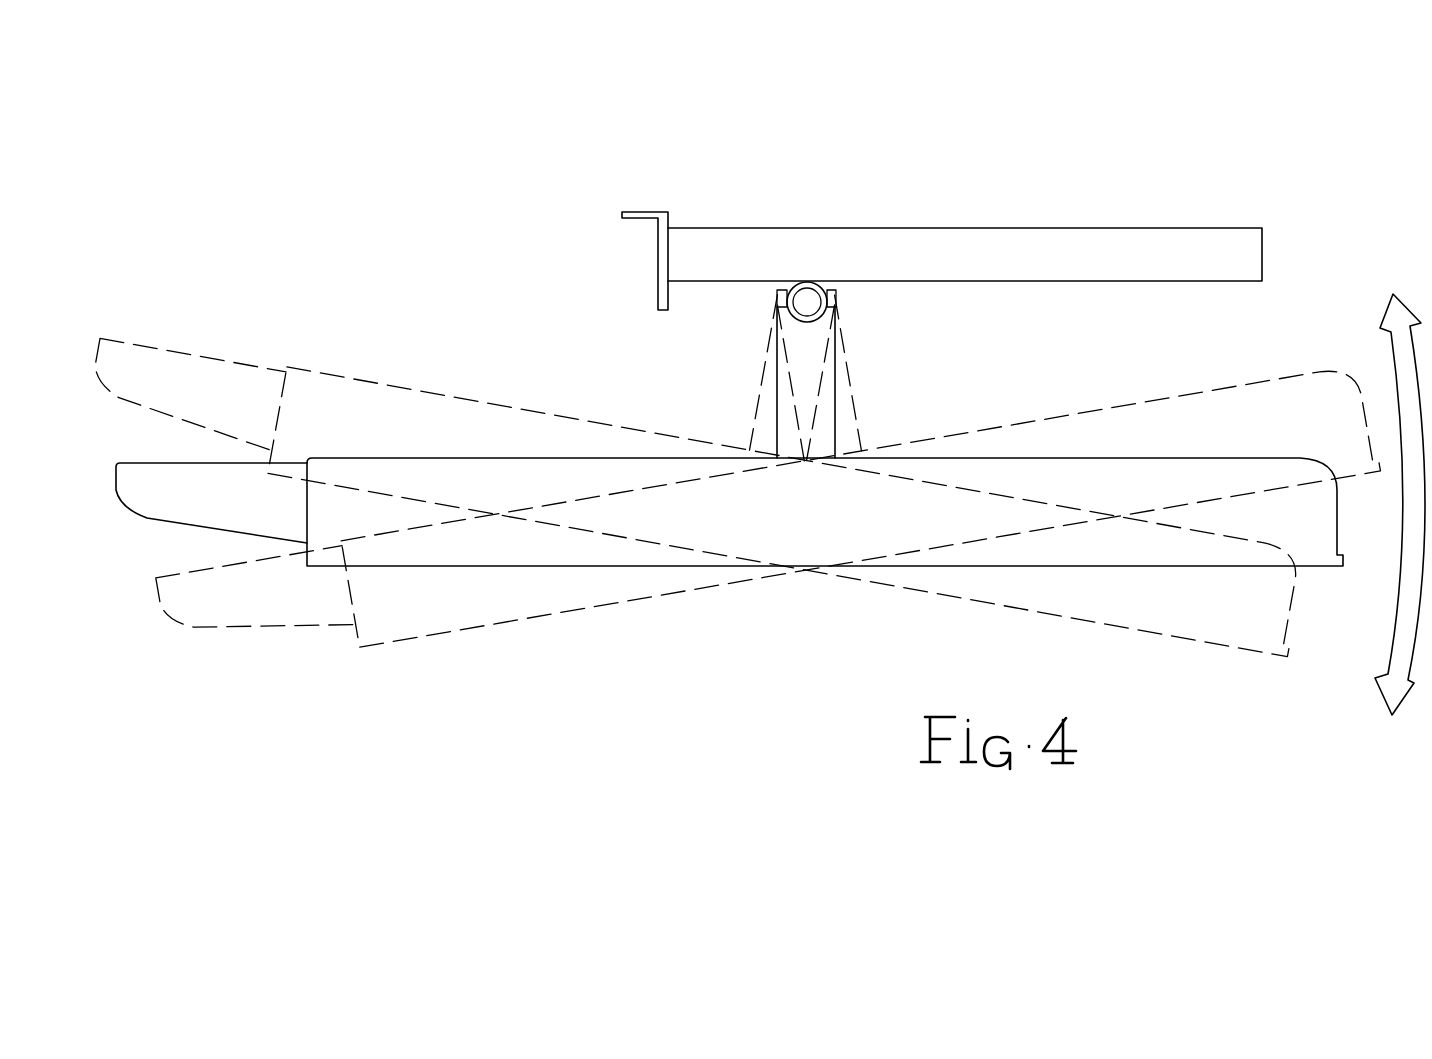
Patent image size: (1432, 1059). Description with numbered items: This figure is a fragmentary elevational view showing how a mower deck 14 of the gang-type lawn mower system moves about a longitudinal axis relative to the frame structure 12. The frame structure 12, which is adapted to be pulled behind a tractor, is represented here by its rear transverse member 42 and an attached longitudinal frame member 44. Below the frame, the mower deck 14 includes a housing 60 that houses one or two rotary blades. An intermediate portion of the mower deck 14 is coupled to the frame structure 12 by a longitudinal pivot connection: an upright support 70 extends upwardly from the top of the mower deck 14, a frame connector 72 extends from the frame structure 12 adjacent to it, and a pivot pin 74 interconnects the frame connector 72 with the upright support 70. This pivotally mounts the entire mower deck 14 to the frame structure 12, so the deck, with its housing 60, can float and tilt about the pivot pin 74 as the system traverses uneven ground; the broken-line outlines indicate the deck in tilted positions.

The frame structure 12 is at (899, 148).
The mower deck 14 is at (1326, 627).
The rear transverse member 42 is at (1046, 228).
The longitudinal frame member 44 is at (647, 212).
The housing 60 is at (383, 548).
The upright support 70 is at (775, 403).
The frame connector 72 is at (833, 304).
The pivot pin 74 is at (800, 303).